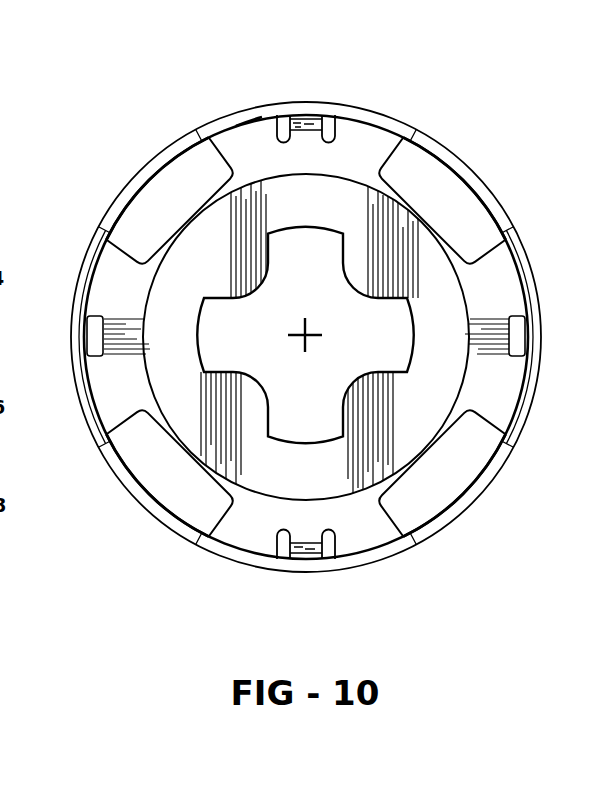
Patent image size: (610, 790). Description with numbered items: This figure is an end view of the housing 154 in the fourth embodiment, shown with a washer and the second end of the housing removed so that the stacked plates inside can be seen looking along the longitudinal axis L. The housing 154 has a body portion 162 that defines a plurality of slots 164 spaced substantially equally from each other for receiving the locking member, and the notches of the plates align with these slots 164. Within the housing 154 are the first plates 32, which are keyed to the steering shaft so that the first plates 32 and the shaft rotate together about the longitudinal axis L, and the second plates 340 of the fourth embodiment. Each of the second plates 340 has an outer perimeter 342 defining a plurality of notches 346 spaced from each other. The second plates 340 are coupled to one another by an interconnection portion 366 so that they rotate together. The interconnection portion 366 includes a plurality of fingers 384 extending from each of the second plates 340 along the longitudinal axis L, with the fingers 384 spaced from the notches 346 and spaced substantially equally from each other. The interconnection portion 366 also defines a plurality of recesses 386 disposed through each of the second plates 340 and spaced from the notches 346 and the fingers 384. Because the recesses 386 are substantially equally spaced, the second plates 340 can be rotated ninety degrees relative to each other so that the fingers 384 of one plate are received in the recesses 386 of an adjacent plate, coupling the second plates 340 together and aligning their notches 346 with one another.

The first plates 32 is at (352, 247).
The longitudinal axis L is at (297, 332).
The housing 154 is at (525, 395).
The body portion 162 is at (500, 207).
The slot 164 is at (427, 143).
The second plates 340 is at (107, 380).
The outer perimeter 342 is at (255, 136).
The notches 346 is at (454, 196).
The interconnection portion 366 is at (356, 102).
The fingers 384 is at (312, 118).
The recesses 386 is at (515, 333).